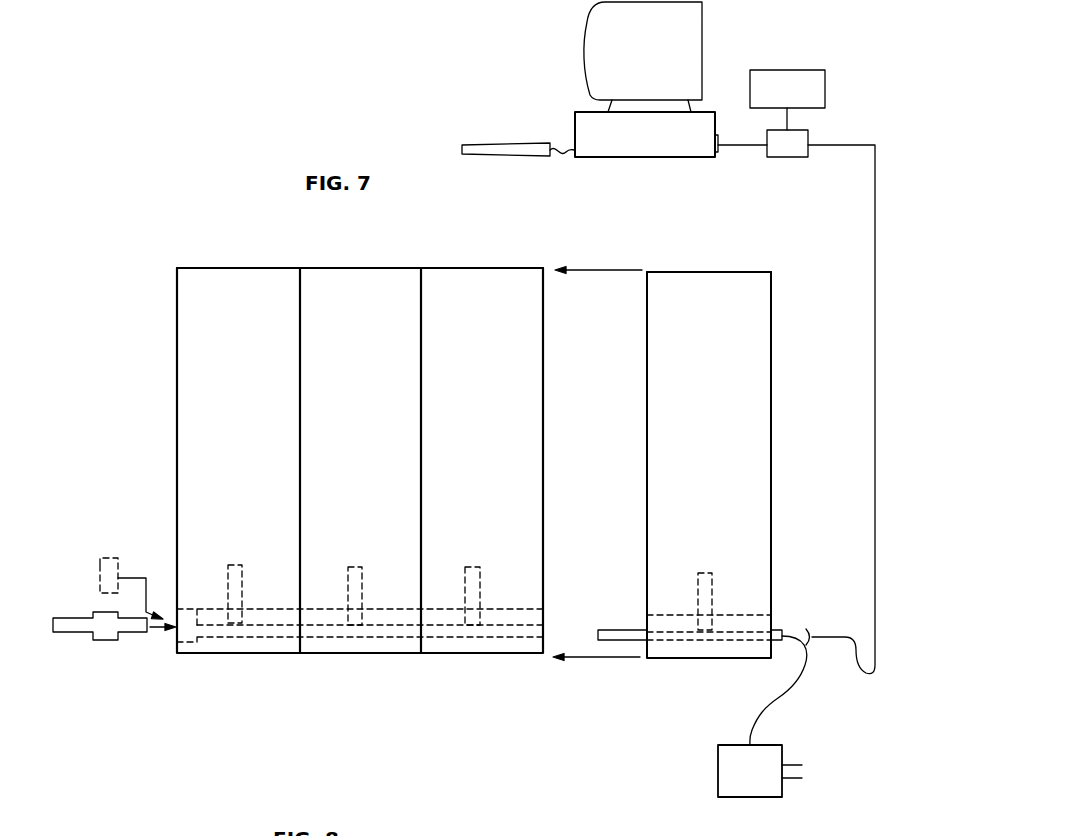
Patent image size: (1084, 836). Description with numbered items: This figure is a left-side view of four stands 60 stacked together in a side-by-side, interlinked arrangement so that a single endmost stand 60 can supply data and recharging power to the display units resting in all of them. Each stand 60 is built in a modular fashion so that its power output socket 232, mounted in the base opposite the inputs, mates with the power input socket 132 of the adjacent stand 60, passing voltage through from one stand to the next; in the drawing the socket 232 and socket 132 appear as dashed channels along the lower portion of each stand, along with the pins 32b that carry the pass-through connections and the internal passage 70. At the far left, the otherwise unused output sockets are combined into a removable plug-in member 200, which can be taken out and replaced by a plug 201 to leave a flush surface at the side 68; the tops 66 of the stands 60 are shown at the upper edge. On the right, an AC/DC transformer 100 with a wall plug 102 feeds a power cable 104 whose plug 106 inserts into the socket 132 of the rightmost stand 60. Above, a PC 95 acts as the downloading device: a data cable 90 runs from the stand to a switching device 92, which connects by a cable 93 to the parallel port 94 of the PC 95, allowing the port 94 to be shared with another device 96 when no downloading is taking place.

The sensor pin 32b is at (243, 578).
The stand 60 is at (283, 397).
The cell housing top 66 is at (240, 296).
The side 68 is at (177, 360).
The upper fluid channel 70 is at (490, 605).
The data cable 90 is at (875, 435).
The switching device 92 is at (795, 148).
The cable 93 is at (744, 147).
The parallel port 94 is at (718, 130).
The PC 95 is at (658, 147).
The device 96 is at (820, 80).
The AC/DC transformer 100 is at (759, 790).
The plug 102 is at (793, 768).
The power cable 104 is at (768, 700).
The plug 106 is at (778, 645).
The power input socket 132 is at (528, 637).
The plug-in member 200 is at (83, 633).
The plug 201 is at (95, 578).
The power output socket 232 is at (262, 643).